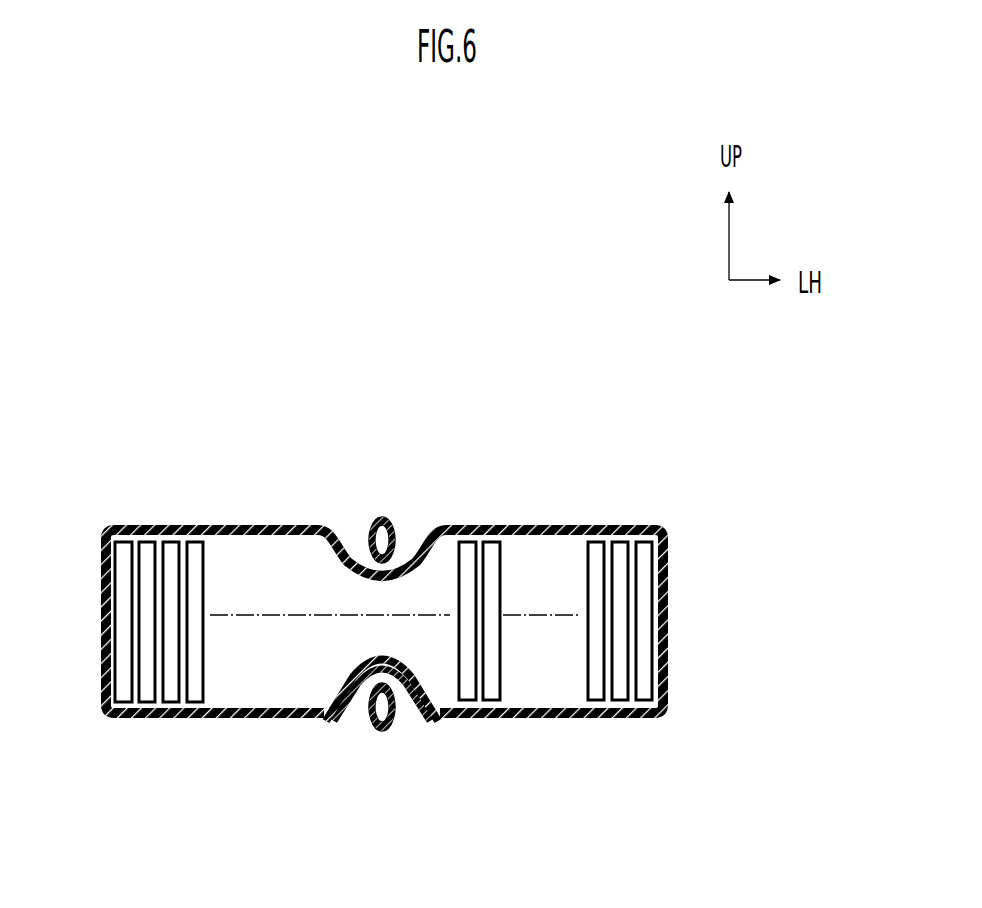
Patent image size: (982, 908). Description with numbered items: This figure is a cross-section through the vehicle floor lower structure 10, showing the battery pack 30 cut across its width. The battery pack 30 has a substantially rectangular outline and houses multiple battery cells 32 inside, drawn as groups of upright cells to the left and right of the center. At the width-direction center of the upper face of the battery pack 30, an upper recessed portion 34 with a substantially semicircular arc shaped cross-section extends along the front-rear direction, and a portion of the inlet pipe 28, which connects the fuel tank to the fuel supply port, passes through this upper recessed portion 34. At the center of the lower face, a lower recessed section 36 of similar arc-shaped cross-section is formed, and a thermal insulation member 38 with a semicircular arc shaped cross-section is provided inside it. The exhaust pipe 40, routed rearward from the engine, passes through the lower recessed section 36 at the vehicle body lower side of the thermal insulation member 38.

The vehicle floor lower structure 10 is at (505, 410).
The inlet pipe 28 is at (381, 516).
The battery pack 30 is at (585, 514).
The battery cells 32 is at (205, 593).
The upper recessed portion 34 is at (420, 528).
The lower recessed section 36 is at (343, 724).
The thermal insulation member 38 is at (427, 724).
The exhaust pipe 40 is at (382, 733).